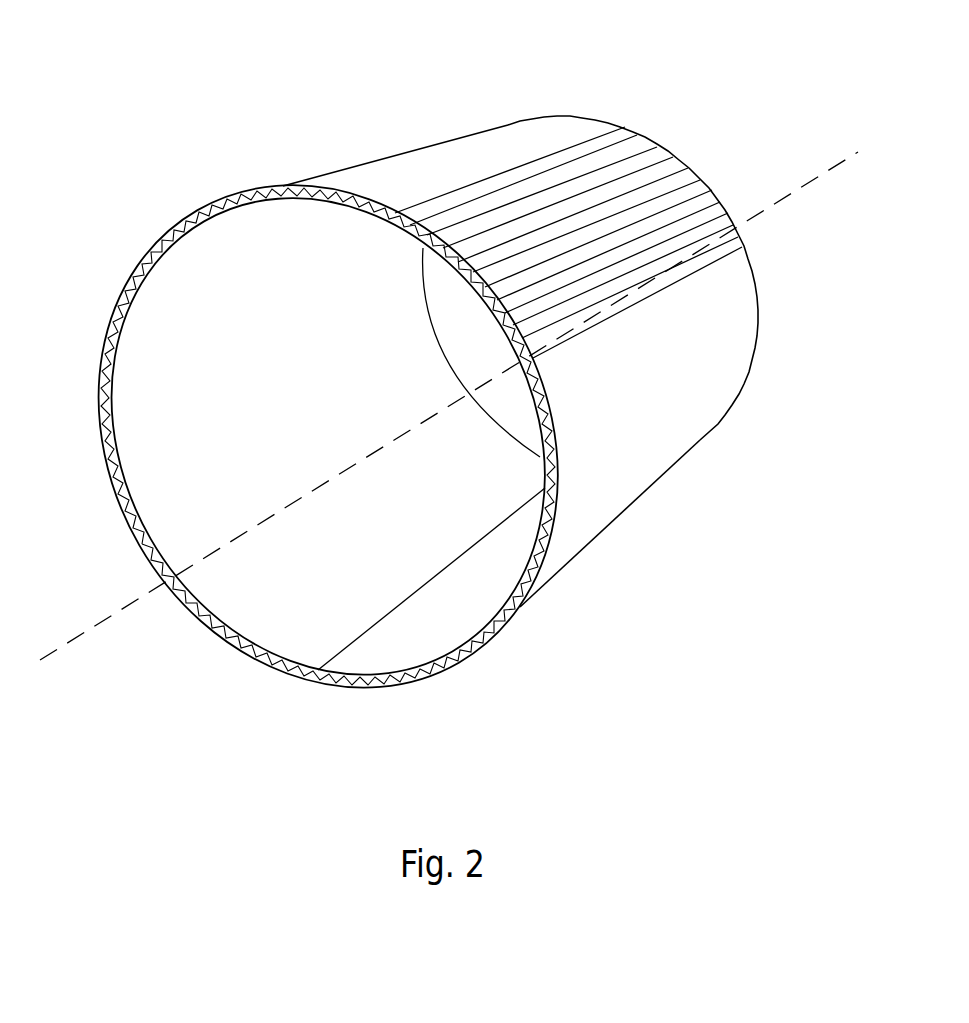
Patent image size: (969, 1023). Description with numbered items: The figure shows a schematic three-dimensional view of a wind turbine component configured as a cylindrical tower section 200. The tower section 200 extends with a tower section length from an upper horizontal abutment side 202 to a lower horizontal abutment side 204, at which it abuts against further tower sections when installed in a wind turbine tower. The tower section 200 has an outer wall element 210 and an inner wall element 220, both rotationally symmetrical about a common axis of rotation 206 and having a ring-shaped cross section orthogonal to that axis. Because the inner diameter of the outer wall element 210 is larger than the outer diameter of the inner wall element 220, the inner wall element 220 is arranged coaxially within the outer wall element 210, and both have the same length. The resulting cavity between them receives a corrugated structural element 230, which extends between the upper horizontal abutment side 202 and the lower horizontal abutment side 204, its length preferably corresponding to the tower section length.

The tower section 200 is at (128, 180).
The upper horizontal abutment side 202 is at (187, 667).
The lower horizontal abutment side 204 is at (765, 174).
The axis of rotation 206 is at (810, 183).
The outer wall element 210 is at (507, 157).
The inner wall element 220 is at (117, 392).
The structural element 230 is at (323, 193).